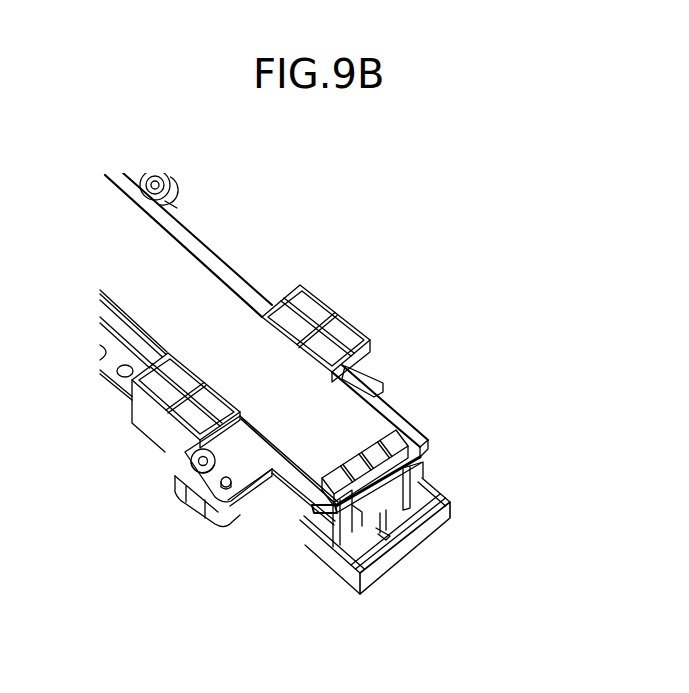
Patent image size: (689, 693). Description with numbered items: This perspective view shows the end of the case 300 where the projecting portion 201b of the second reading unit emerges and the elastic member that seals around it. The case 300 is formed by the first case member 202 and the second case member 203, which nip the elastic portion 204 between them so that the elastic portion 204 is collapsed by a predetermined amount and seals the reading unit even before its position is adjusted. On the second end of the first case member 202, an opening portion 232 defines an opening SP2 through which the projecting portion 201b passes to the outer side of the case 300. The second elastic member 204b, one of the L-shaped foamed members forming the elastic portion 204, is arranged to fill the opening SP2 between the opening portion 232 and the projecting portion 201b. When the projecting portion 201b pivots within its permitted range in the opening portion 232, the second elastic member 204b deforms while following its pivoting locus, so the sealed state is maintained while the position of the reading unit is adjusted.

The case 300 is at (421, 414).
The second case member 203 is at (310, 307).
The elastic portion 204 is at (305, 519).
The first case member 202 is at (422, 537).
The projecting portion 201b is at (407, 483).
The second elastic member 204b is at (362, 532).
The opening SP2 is at (383, 528).
The opening portion 232 is at (362, 520).